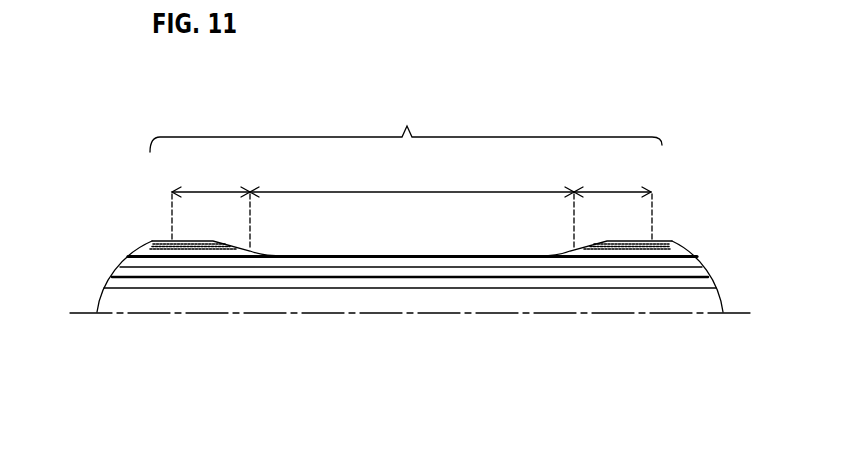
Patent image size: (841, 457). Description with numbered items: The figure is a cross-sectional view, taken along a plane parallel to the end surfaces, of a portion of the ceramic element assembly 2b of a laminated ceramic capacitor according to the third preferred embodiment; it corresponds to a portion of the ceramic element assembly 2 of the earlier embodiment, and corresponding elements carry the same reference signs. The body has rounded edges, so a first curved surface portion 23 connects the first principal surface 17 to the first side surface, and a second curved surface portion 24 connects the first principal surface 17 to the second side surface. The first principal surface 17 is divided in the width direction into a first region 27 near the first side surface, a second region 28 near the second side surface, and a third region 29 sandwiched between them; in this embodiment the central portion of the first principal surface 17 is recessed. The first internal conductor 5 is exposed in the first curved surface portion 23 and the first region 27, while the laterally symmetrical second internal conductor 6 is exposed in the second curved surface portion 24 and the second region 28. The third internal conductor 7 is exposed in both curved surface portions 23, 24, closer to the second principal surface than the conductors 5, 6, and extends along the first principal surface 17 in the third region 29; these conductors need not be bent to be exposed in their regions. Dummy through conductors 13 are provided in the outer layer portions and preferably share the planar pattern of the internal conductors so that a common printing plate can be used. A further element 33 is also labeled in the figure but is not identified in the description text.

The ceramic element assembly 2 is at (255, 313).
The ceramic element assembly 2b is at (197, 78).
The first internal conductor 5 is at (163, 244).
The second internal conductor 6 is at (666, 244).
The third internal conductor 7 is at (147, 256).
The dummy through conductor 13 is at (172, 288).
The first principal surface 17 is at (406, 125).
The first curved surface portion 23 is at (113, 272).
The second curved surface portion 24 is at (700, 258).
The first region 27 is at (231, 201).
The second region 28 is at (626, 201).
The third region 29 is at (412, 174).
The intermediate layer 33 is at (359, 288).